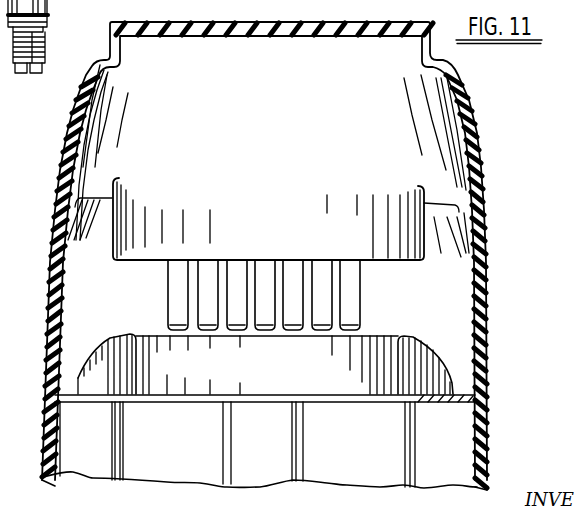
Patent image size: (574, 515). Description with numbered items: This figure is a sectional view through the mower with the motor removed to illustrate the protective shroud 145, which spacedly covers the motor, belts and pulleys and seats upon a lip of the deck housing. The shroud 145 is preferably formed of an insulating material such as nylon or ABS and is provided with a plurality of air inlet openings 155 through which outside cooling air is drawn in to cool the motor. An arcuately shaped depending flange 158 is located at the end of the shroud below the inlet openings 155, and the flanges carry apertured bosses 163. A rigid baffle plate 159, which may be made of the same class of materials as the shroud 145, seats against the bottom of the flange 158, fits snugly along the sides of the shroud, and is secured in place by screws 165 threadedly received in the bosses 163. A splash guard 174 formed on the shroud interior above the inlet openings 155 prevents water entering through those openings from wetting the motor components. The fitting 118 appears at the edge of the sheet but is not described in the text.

The threaded fitting 118 is at (45, 36).
The protective shroud 145 is at (486, 318).
The air inlet openings 155 is at (352, 278).
The depending flange 158 is at (318, 378).
The baffle plate 159 is at (97, 403).
The apertured bosses 163 is at (118, 378).
The screws 165 is at (123, 403).
The splash guard 174 is at (158, 243).